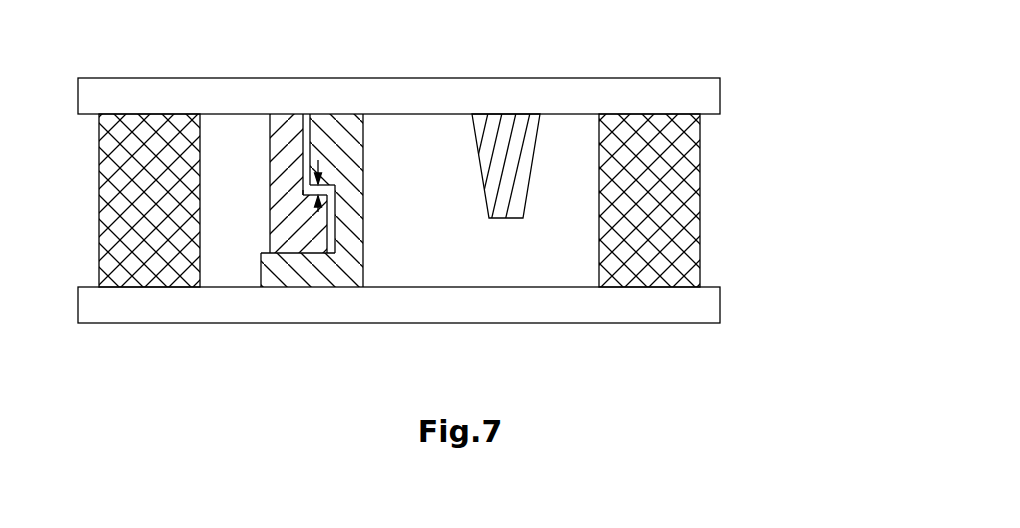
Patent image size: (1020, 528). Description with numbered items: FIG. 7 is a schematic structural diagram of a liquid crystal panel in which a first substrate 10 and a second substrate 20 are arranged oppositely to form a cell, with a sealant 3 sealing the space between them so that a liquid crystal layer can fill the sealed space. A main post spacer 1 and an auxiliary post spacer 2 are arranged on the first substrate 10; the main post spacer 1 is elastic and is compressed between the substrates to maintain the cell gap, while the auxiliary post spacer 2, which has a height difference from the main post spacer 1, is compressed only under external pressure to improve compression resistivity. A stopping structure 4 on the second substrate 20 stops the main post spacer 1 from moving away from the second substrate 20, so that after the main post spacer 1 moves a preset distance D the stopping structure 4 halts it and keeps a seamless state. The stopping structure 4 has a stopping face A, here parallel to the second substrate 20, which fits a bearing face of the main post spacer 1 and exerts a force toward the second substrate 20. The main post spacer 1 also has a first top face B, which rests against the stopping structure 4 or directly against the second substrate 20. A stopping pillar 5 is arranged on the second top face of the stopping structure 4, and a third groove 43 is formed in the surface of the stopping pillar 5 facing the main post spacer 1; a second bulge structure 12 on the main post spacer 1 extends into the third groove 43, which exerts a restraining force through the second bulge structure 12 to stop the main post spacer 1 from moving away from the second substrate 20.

The first substrate 10 is at (670, 100).
The second substrate 20 is at (670, 300).
The sealant 3 is at (670, 203).
The auxiliary post spacer 2 is at (518, 175).
The main post spacer 1 is at (262, 170).
The stopping structure 4 is at (372, 165).
The stopping pillar 5 is at (347, 187).
The second bulge structure 12 is at (317, 239).
The third groove 43 is at (325, 228).
The stopping face A is at (312, 197).
The first top face B is at (302, 257).
The preset distance D is at (328, 184).